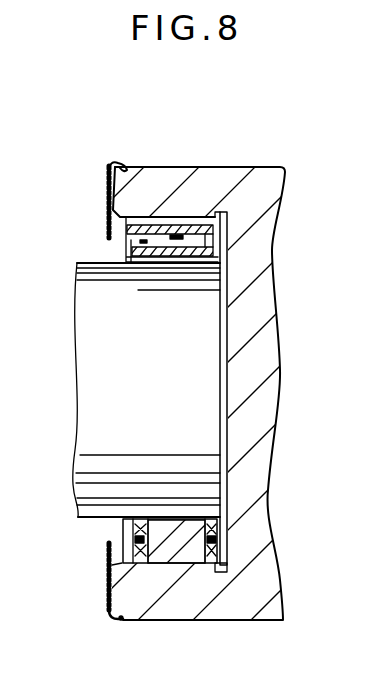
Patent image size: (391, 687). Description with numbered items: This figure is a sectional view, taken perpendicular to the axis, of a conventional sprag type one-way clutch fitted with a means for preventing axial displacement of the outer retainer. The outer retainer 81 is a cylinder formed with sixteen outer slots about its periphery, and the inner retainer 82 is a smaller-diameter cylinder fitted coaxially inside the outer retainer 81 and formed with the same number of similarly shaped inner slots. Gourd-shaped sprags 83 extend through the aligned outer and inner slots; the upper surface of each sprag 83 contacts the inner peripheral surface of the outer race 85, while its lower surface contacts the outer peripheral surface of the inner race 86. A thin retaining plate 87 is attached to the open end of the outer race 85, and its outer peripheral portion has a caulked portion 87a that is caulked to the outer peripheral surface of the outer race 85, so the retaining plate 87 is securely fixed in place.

The outer retainer 81 is at (228, 227).
The inner retainer 82 is at (228, 255).
The sprag 83 is at (182, 552).
The outer race 85 is at (272, 193).
The inner race 86 is at (92, 359).
The retaining plate 87 is at (107, 194).
The caulked portion 87a is at (108, 163).